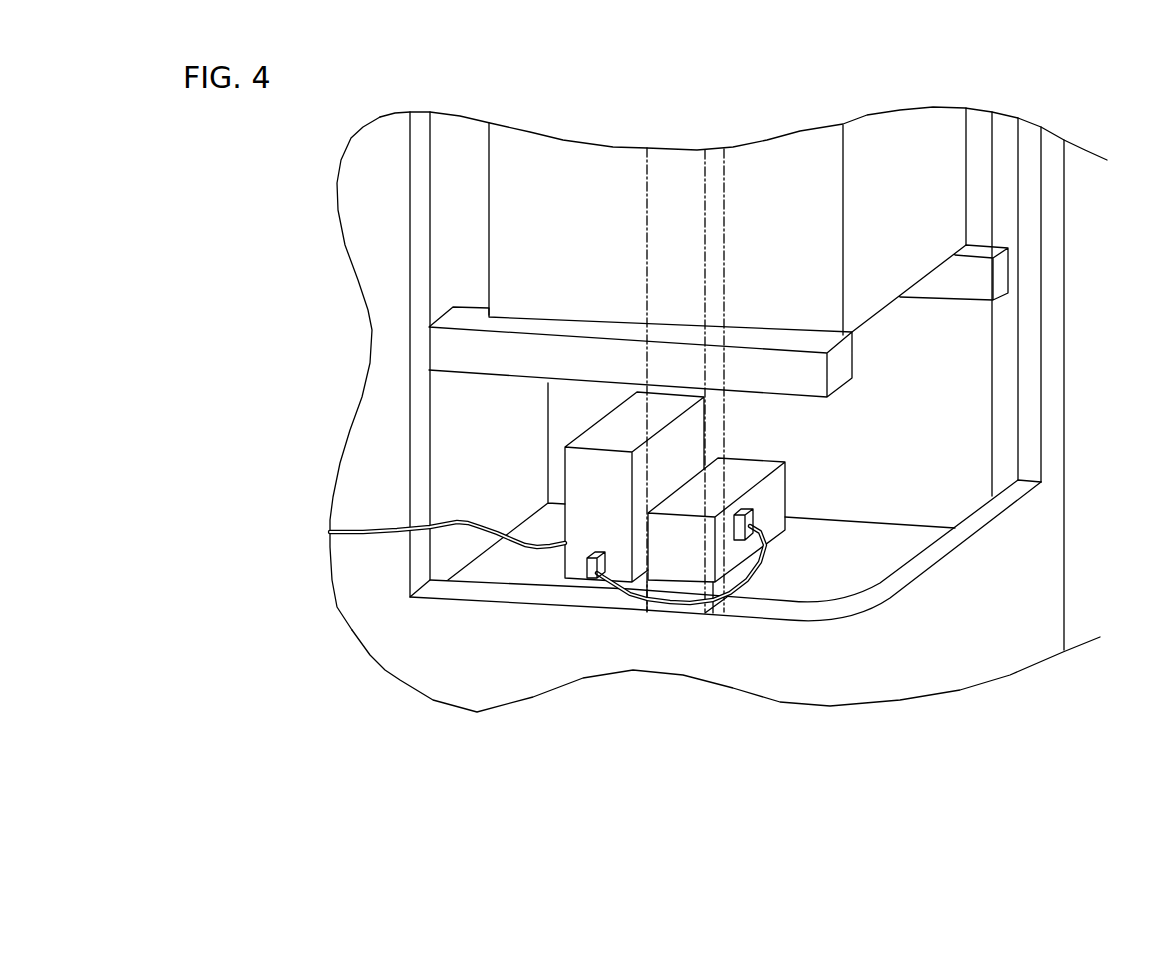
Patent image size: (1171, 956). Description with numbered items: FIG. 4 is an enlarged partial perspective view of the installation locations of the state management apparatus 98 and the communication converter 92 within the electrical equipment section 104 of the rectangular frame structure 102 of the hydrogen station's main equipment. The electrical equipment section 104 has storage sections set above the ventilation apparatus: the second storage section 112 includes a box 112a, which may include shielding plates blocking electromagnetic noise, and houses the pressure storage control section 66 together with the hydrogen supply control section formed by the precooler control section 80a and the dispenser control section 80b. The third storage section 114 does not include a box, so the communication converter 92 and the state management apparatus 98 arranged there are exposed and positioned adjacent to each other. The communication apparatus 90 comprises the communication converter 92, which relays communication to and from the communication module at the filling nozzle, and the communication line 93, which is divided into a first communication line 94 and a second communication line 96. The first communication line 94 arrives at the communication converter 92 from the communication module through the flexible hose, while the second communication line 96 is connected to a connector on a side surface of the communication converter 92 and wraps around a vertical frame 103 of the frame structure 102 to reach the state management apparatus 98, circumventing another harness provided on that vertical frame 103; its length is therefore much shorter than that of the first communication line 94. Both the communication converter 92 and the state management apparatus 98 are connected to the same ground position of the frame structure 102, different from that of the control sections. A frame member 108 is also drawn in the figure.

The frame structure 102 is at (1068, 218).
The electrical equipment section 104 is at (973, 348).
The frame member 108 is at (453, 150).
The second storage section 112 is at (555, 152).
The box 112a is at (907, 135).
The vertical frame 103 is at (713, 182).
The third storage section 114 is at (868, 560).
The pressure storage control section 66 is at (718, 339).
The precooler control section 80a is at (640, 352).
The dispenser control section 80b is at (930, 288).
The communication apparatus 90 is at (365, 503).
The communication converter 92 is at (565, 465).
The communication line 93 is at (625, 567).
The first communication line 94 is at (452, 520).
The second communication line 96 is at (743, 588).
The state management apparatus 98 is at (773, 490).